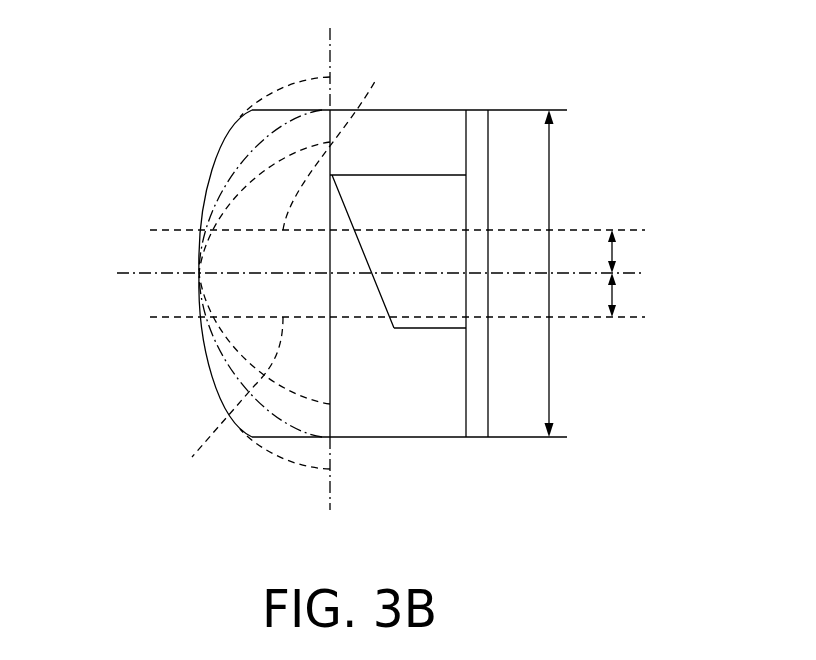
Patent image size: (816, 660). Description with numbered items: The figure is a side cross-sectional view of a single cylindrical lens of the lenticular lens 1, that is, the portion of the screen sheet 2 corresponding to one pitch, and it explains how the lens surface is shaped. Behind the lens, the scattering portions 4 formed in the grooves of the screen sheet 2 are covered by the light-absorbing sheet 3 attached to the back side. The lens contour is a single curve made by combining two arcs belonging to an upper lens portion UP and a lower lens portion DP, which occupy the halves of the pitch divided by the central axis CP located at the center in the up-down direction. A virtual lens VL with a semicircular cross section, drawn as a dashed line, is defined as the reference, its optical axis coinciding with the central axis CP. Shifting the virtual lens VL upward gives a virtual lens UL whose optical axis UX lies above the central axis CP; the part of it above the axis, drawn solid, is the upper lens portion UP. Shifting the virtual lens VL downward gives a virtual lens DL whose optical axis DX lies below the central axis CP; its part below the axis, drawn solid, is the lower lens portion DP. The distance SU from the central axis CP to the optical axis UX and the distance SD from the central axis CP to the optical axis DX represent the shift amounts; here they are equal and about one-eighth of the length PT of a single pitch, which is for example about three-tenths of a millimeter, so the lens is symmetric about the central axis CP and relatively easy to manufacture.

The lenticular lens 1 is at (244, 126).
The screen sheet 2 is at (418, 122).
The light-absorbing sheet 3 is at (480, 143).
The scattering portions 4 is at (453, 248).
The upper lens portion UP is at (215, 147).
The lower lens portion DP is at (210, 375).
The virtual lens VL is at (203, 187).
The virtual lens (upward-shifted) UL is at (283, 86).
The virtual lens (downward-shifted) DL is at (287, 461).
The optical axis of the upper lens portion UX is at (337, 141).
The optical axis of the lower lens portion DX is at (230, 399).
The central axis CP is at (150, 273).
The length corresponding to a single pitch PT is at (551, 433).
The distance from the central axis to the optical axis UX SU is at (612, 230).
The distance from the central axis to the optical axis DX SD is at (612, 273).